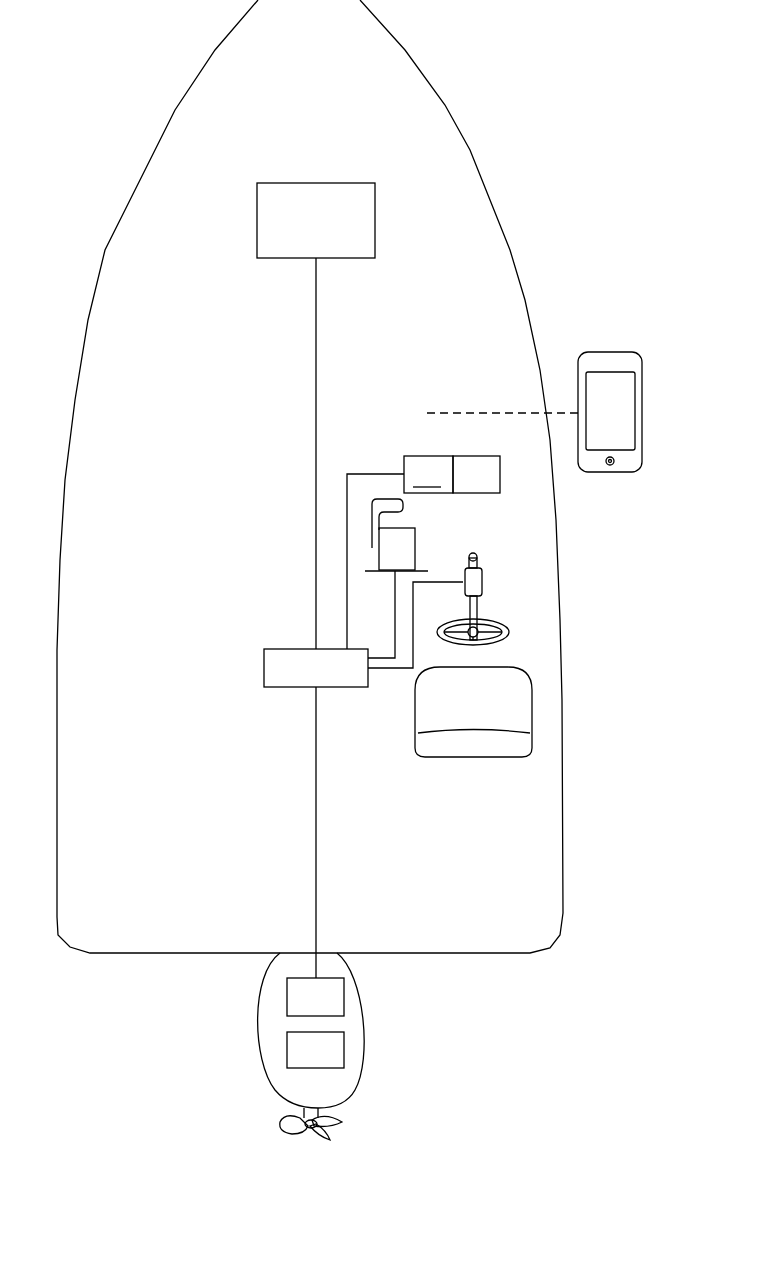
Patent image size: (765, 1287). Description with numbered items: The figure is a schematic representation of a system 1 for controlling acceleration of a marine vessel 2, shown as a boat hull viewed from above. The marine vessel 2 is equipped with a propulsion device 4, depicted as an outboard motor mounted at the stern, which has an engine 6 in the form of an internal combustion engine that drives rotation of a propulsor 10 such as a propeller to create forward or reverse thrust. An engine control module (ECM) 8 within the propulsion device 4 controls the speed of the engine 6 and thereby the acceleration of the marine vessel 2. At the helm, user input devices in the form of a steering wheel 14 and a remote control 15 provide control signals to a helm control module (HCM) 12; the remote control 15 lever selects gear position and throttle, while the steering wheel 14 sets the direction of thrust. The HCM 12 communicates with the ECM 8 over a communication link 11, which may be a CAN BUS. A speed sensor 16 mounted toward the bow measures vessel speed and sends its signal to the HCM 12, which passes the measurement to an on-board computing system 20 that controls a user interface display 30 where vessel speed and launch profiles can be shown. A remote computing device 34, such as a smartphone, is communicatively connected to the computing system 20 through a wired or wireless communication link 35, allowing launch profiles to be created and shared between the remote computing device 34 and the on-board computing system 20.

The system 1 is at (122, 84).
The marine vessel 2 is at (460, 125).
The propulsion device 4 is at (270, 1032).
The engine 6 is at (344, 1050).
The engine control module (ECM) 8 is at (344, 997).
The propulsor 10 is at (283, 1128).
The communication link 11 is at (316, 834).
The helm control module (HCM) 12 is at (264, 667).
The steering wheel 14 is at (505, 628).
The remote control 15 is at (418, 546).
The speed sensor 16 is at (318, 183).
The computing system 20 is at (578, 413).
The user interface display 30 is at (503, 475).
The remote computing device 34 is at (600, 352).
The communication link 35 is at (505, 412).